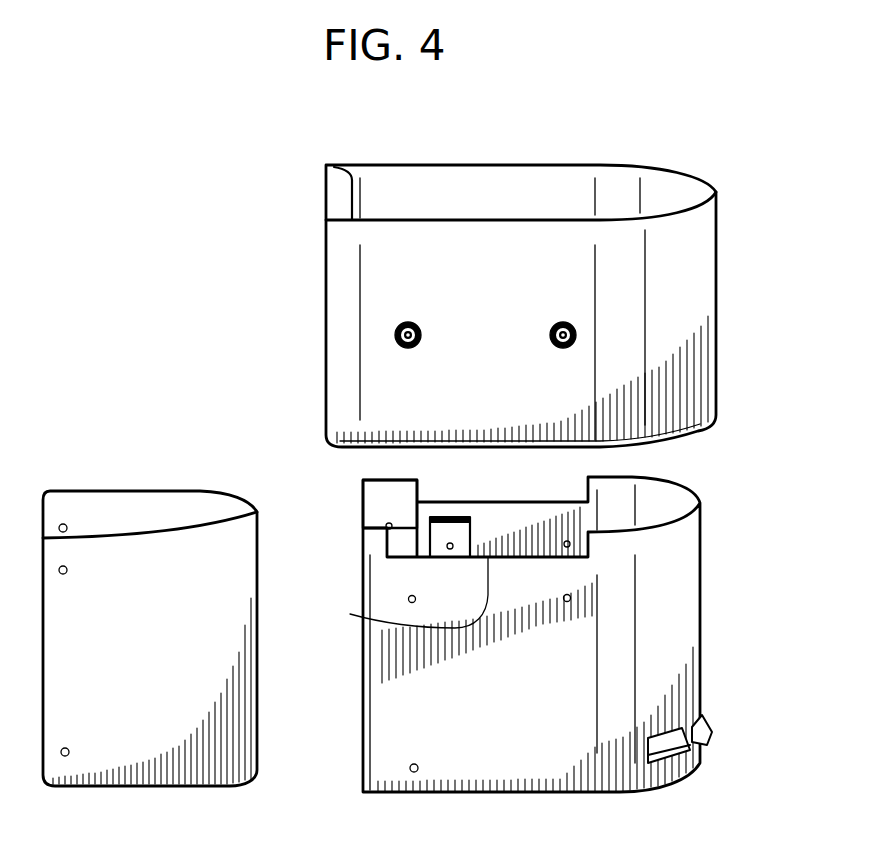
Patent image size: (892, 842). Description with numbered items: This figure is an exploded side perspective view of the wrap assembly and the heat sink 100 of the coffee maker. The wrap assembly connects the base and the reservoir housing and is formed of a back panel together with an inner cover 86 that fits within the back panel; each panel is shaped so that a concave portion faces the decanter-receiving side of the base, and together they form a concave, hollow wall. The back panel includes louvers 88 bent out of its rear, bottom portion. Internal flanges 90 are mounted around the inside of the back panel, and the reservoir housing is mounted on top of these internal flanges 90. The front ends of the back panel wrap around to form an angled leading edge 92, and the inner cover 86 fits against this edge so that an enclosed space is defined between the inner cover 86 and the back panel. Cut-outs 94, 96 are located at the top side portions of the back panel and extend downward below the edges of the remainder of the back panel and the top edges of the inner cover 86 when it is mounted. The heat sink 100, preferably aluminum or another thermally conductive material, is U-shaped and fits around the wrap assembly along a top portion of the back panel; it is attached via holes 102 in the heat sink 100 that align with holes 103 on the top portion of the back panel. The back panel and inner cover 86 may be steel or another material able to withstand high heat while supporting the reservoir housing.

The inner cover 86 is at (166, 666).
The louvers 88 is at (713, 727).
The internal flanges 90 is at (455, 530).
The angled leading edge 92 is at (372, 495).
The cut-out 94 is at (537, 502).
The cut-out 96 is at (350, 614).
The heat sink 100 is at (708, 262).
The holes 102 is at (401, 322).
The holes 103 is at (411, 597).